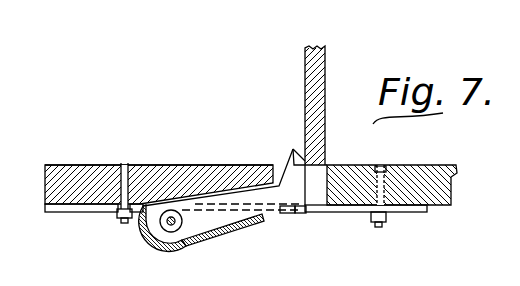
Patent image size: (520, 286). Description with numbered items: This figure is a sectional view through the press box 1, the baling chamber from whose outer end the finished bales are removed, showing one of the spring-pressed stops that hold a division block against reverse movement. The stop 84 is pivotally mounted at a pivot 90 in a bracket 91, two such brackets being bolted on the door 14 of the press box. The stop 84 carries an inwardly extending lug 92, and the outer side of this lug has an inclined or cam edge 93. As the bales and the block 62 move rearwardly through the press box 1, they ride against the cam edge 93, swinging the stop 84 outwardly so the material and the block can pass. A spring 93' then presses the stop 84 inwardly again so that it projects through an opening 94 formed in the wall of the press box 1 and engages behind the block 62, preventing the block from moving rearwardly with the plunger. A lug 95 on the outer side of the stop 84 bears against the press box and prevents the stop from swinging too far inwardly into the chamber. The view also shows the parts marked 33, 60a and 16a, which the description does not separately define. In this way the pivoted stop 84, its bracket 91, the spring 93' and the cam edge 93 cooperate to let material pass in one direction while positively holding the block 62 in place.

The press box 1 is at (159, 148).
The door 14 is at (88, 170).
The inclined or cam edge 93 is at (220, 170).
The inwardly extending lug 92 is at (296, 150).
The block 62 is at (327, 131).
The bracket plate 33 is at (411, 212).
The opening 94 is at (318, 197).
The lug 95 is at (300, 212).
The stop 84 is at (273, 198).
The pivot 90 is at (163, 223).
The bracket 91 is at (145, 225).
The spring 93' is at (219, 250).
The deck member 60a is at (381, 274).
The deck member 16a is at (447, 281).